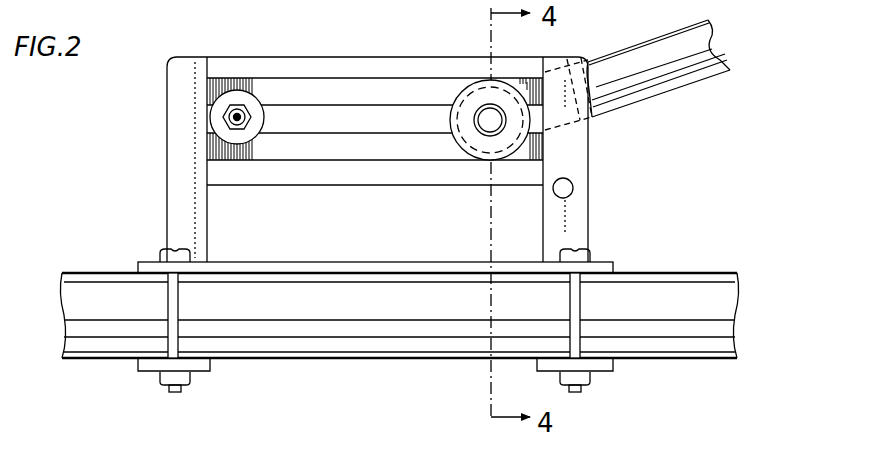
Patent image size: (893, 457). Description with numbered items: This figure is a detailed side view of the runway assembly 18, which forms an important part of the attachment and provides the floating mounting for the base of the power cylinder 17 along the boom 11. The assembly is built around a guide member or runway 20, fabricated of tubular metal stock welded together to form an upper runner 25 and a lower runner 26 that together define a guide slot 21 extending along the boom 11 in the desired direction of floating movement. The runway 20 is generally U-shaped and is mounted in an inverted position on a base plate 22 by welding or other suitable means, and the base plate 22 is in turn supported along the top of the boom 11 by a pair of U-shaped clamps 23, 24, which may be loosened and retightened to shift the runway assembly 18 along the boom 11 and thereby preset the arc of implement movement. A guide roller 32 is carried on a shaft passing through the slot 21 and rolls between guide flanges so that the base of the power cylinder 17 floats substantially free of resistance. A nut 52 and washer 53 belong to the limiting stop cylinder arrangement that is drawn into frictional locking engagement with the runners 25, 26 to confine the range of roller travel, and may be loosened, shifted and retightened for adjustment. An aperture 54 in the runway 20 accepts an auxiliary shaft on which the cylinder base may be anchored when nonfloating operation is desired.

The boom 11 is at (390, 349).
The power cylinder 17 is at (683, 82).
The runway assembly 18 is at (293, 46).
The guide member or runway 20 is at (180, 140).
The slot 21 is at (372, 131).
The base plate 22 is at (305, 266).
The U-shaped clamp 23 is at (200, 372).
The U-shaped clamp 24 is at (600, 372).
The upper runner 25 is at (360, 90).
The lower runner 26 is at (431, 152).
The guide roller 32 is at (512, 163).
The nut 52 is at (228, 112).
The washer 53 is at (236, 95).
The aperture 54 is at (574, 189).